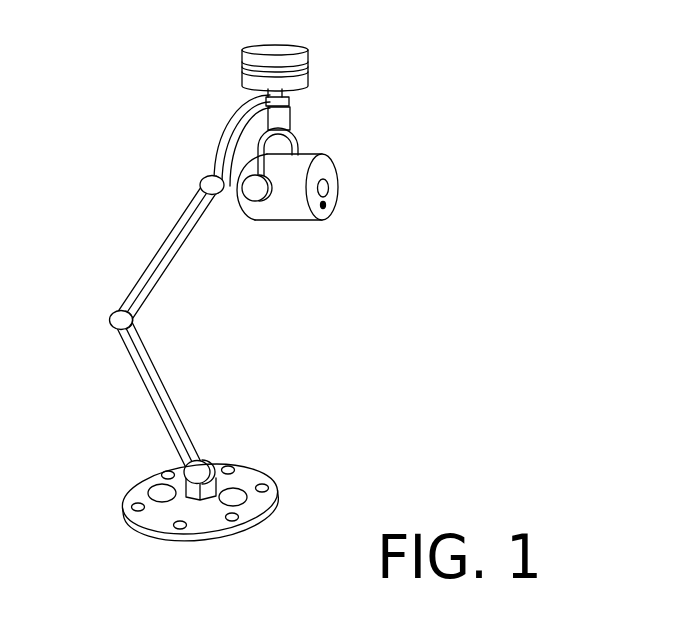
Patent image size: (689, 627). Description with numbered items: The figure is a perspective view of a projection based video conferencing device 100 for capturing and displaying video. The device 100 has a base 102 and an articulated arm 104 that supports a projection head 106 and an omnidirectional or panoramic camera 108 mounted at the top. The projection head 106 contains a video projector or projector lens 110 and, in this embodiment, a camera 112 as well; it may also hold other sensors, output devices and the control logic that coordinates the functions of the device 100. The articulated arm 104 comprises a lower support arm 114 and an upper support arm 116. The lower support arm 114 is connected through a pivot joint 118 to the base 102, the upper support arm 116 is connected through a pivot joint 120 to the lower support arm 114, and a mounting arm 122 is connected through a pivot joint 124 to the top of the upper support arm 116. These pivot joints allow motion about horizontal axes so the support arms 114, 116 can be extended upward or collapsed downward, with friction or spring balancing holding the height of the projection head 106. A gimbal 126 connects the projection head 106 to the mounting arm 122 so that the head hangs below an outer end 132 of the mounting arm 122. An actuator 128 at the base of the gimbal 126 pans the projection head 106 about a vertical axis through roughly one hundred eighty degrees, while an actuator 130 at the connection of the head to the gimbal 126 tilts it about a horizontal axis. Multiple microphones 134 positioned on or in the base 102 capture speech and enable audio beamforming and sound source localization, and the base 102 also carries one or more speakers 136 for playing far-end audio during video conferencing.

The projection based video conferencing device 100 is at (120, 56).
The base 102 is at (137, 515).
The articulated arm 104 is at (152, 343).
The projection head 106 is at (292, 212).
The omnidirectional or panoramic camera 108 is at (305, 56).
The projector lens 110 is at (328, 188).
The camera 112 is at (324, 210).
The lower support arm 114 is at (143, 378).
The upper support arm 116 is at (165, 247).
The pivot joint 118 is at (213, 461).
The pivot joint 120 is at (110, 318).
The mounting arm 122 is at (217, 130).
The pivot joint 124 is at (201, 184).
The gimbal 126 is at (299, 148).
The actuator 128 is at (285, 117).
The actuator 130 is at (258, 190).
The outer end 132 is at (281, 100).
The microphones 134 is at (165, 472).
The speakers 136 is at (158, 497).